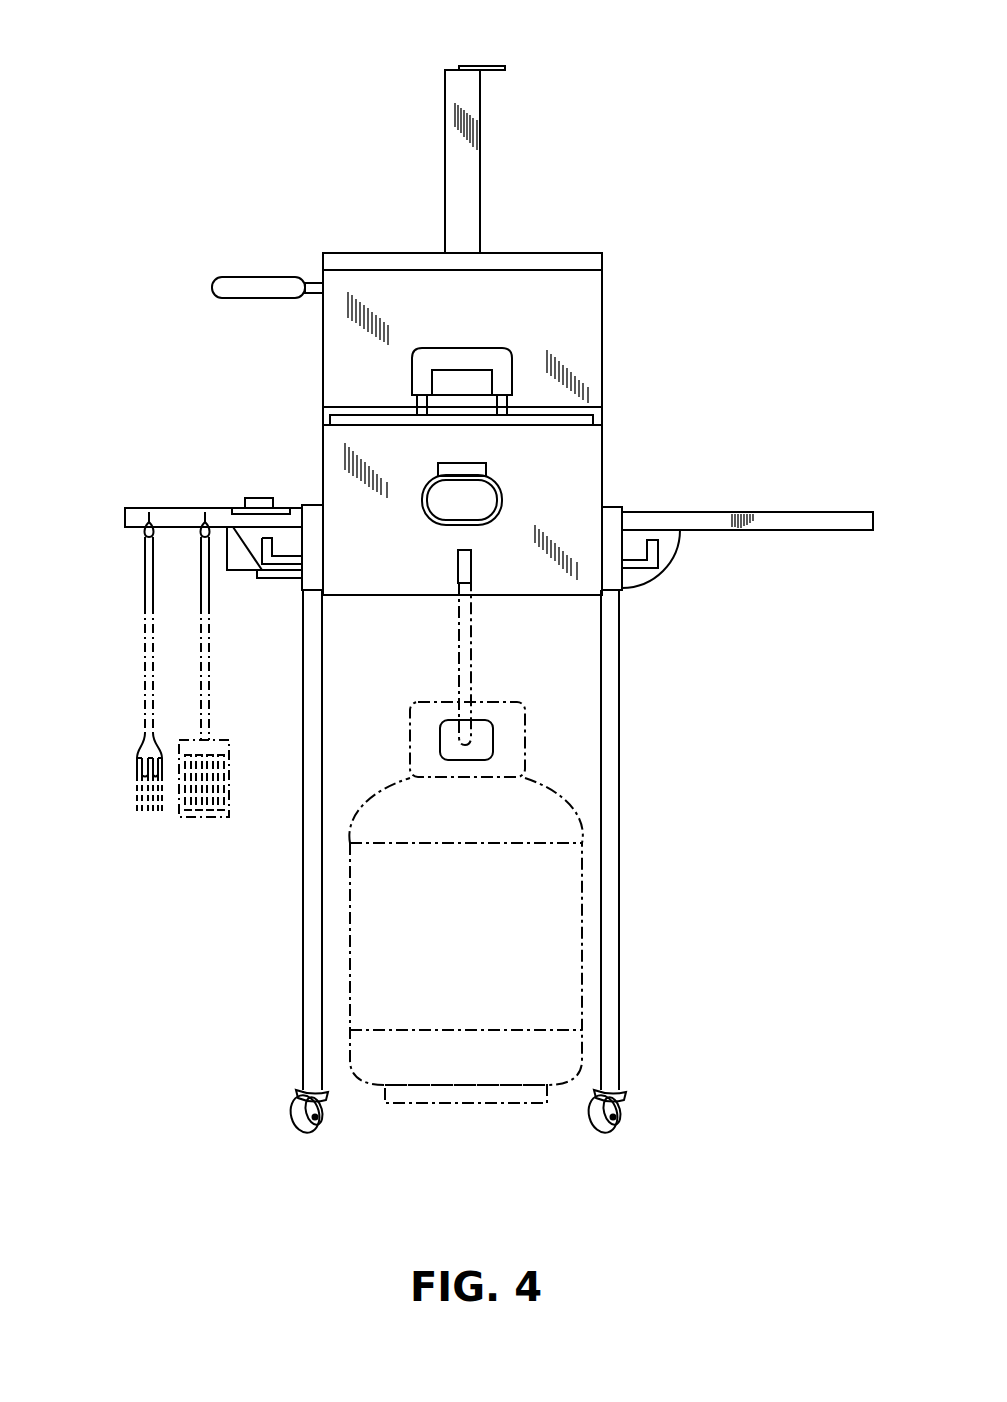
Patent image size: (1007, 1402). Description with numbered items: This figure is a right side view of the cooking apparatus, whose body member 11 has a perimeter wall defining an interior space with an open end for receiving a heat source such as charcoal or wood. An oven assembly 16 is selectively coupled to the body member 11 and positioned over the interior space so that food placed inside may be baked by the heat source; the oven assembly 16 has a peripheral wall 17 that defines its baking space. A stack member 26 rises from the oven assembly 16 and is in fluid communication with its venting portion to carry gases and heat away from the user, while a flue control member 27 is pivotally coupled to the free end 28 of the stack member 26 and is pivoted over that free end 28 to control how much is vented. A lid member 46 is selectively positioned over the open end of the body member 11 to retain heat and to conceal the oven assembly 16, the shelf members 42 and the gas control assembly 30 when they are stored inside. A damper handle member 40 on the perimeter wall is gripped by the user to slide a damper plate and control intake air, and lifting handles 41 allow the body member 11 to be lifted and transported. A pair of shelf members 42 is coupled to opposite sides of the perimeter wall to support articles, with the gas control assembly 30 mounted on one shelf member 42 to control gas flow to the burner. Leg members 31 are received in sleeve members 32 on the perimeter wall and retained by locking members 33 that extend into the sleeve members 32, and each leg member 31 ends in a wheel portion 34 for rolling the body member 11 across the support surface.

The oven assembly 16 is at (557, 218).
The peripheral wall 17 is at (582, 295).
The stack member 26 is at (463, 167).
The flue control member 27 is at (473, 66).
The free end 28 is at (456, 72).
The lid member 46 is at (602, 415).
The body member 11 is at (602, 450).
The lifting handle 41 is at (502, 500).
The damper handle member 40 is at (458, 568).
The sleeve member 32 is at (620, 510).
The locking member 33 is at (635, 567).
The shelf member 42 is at (125, 518).
The gas control assembly 30 is at (262, 483).
The leg member 31 is at (303, 885).
The wheel portion 34 is at (297, 1125).